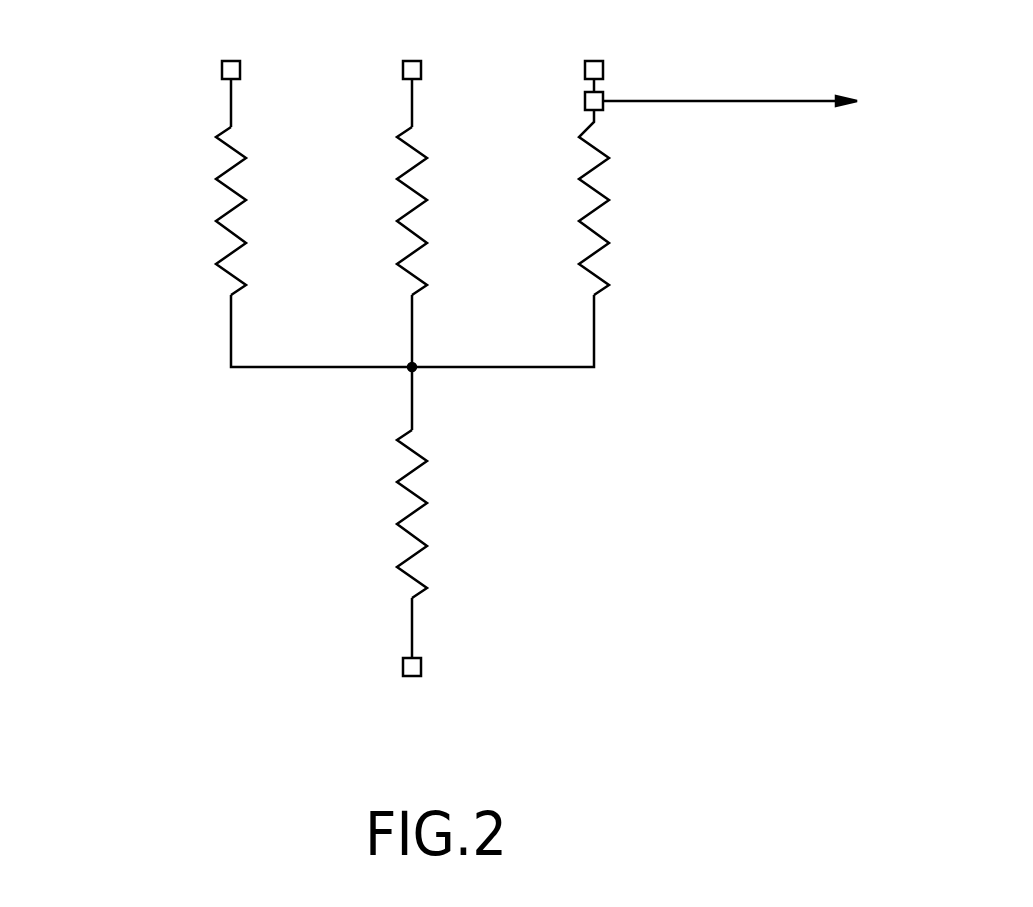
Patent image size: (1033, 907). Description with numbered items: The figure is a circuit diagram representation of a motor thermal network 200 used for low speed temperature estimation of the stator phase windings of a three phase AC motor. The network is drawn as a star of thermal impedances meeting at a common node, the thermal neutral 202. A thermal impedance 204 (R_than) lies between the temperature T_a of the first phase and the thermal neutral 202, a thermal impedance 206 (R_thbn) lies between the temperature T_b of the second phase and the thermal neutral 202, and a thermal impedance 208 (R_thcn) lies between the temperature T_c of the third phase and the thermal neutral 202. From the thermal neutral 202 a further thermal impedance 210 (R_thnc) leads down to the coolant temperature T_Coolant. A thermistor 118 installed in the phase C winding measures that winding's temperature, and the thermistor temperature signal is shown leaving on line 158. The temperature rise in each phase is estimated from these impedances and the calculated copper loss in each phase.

The motor thermal network 200 is at (151, 537).
The thermal neutral 202 is at (432, 385).
The thermal impedance R_than 204 is at (244, 193).
The thermal impedance R_thbn 206 is at (425, 193).
The thermal impedance R_thcn 208 is at (609, 193).
The thermal impedance R_thnc 210 is at (397, 533).
The thermistor 118 is at (585, 101).
The line 158 is at (766, 100).